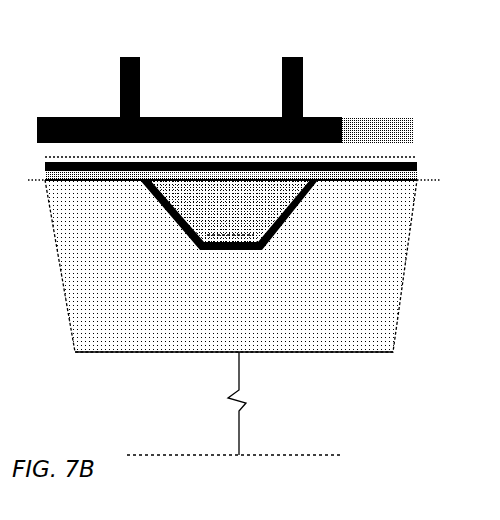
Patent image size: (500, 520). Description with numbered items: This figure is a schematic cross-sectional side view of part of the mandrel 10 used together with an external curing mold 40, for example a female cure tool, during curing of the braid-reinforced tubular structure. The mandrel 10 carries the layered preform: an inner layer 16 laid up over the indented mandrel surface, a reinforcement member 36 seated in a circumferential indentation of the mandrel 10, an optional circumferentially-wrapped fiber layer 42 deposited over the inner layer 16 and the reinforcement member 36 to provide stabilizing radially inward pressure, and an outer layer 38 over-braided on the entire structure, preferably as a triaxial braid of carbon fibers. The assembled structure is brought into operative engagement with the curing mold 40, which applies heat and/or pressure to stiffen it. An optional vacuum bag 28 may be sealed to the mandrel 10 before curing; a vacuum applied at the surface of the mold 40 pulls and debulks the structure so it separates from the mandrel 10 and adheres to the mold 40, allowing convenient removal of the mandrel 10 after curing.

The mandrel 10 is at (123, 318).
The inner layer 16 is at (198, 247).
The vacuum bag 28 is at (432, 182).
The reinforcement member 36 is at (170, 208).
The outer layer 38 is at (47, 163).
The external curing mold 40 is at (352, 126).
The circumferentially-wrapped fiber layer 42 is at (7, 170).